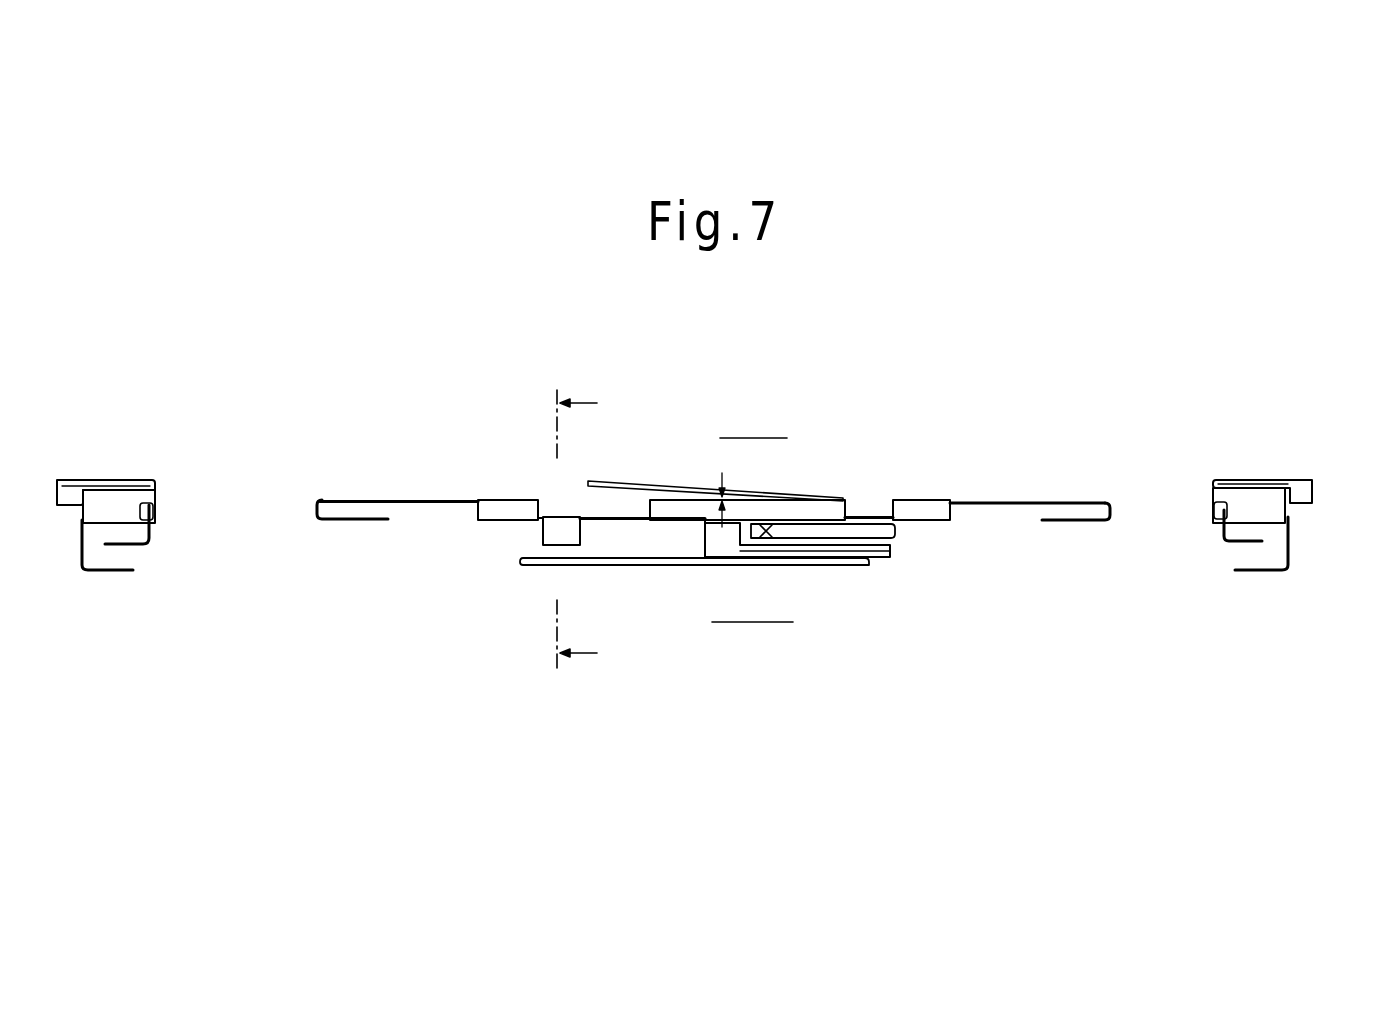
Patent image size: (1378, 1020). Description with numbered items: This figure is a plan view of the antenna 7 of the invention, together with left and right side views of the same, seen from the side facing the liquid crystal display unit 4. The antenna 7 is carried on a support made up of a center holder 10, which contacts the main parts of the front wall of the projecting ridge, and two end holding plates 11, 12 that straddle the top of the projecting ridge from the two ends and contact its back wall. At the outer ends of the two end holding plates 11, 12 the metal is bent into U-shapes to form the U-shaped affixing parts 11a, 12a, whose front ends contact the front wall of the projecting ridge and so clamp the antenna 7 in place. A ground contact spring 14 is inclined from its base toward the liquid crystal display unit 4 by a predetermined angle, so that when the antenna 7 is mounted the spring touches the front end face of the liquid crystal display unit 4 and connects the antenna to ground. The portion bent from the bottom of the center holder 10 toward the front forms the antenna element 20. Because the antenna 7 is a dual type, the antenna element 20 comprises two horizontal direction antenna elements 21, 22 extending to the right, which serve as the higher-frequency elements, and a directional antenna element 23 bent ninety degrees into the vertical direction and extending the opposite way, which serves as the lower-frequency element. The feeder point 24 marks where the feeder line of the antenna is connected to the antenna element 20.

The liquid crystal display unit 4 is at (1250, 480).
The antenna 7 is at (176, 551).
The center holder 10 is at (615, 515).
The end holding plate 11 is at (422, 506).
The U-shaped affixing part 11a is at (338, 523).
The end holding plate 12 is at (1015, 508).
The U-shaped curved part 12a is at (1088, 525).
The ground contact spring 14 is at (110, 478).
The antenna element 20 is at (105, 597).
The horizontal direction antenna element 21 is at (897, 534).
The horizontal direction antenna element 22 is at (893, 557).
The directional antenna element 23 is at (620, 569).
The feeder point 24 is at (770, 531).